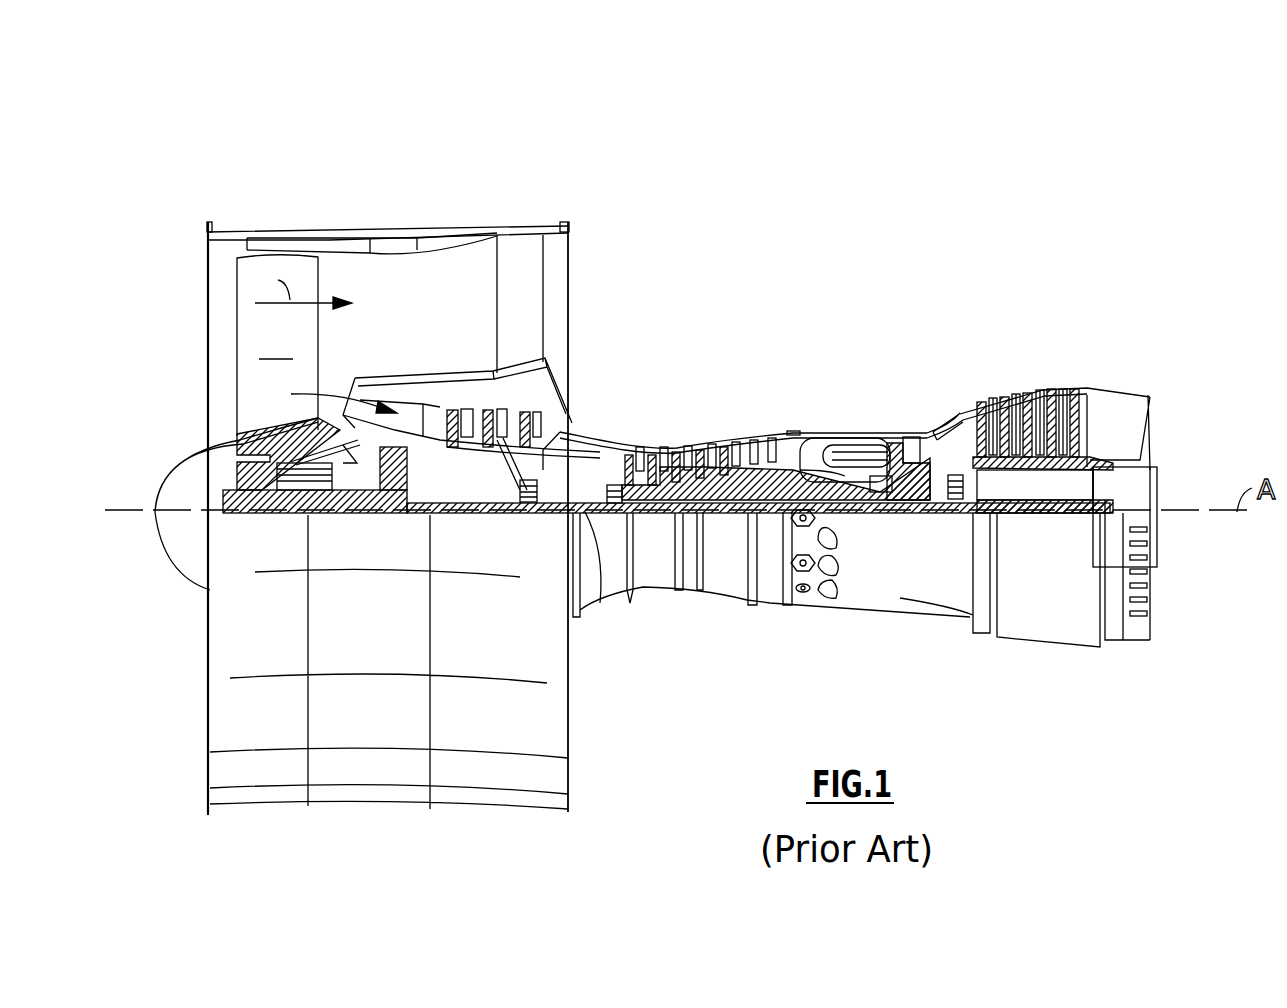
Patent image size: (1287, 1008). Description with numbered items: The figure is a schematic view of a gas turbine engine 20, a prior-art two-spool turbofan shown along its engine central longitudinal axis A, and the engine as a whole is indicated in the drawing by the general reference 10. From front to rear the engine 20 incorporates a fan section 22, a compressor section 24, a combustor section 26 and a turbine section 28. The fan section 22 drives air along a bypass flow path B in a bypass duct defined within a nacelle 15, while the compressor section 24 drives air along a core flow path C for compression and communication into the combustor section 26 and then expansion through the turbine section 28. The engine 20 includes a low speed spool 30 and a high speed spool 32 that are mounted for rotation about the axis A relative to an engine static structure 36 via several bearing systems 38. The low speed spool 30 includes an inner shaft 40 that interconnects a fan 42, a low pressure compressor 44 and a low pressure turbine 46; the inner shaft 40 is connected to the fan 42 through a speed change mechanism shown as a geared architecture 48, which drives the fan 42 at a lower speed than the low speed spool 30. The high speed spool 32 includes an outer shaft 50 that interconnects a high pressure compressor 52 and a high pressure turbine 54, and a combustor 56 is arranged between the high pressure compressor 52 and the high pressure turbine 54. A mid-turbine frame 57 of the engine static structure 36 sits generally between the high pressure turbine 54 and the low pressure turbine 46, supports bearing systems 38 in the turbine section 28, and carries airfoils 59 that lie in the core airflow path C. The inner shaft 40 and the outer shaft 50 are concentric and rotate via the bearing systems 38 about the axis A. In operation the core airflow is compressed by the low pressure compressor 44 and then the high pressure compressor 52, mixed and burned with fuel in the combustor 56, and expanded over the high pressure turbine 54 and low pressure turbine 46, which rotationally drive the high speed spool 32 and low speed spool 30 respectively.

The gas turbine engine (prior art) 10 is at (127, 130).
The nacelle 15 is at (388, 238).
The gas turbine engine 20 is at (862, 262).
The fan section 22 is at (316, 220).
The compressor section 24 is at (628, 405).
The combustor section 26 is at (845, 395).
The turbine section 28 is at (1000, 355).
The low speed spool 30 is at (727, 530).
The high speed spool 32 is at (767, 480).
The engine static structure 36 is at (769, 617).
The bearing systems 38 is at (530, 513).
The inner shaft 40 is at (600, 603).
The fan 42 is at (317, 345).
The low pressure compressor 44 is at (497, 418).
The low pressure turbine 46 is at (1037, 392).
The geared architecture 48 is at (392, 497).
The outer shaft 50 is at (845, 494).
The high pressure compressor 52 is at (703, 487).
The high pressure turbine 54 is at (908, 437).
The combustor 56 is at (843, 454).
The mid-turbine frame 57 is at (955, 418).
The airfoils 59 is at (985, 488).